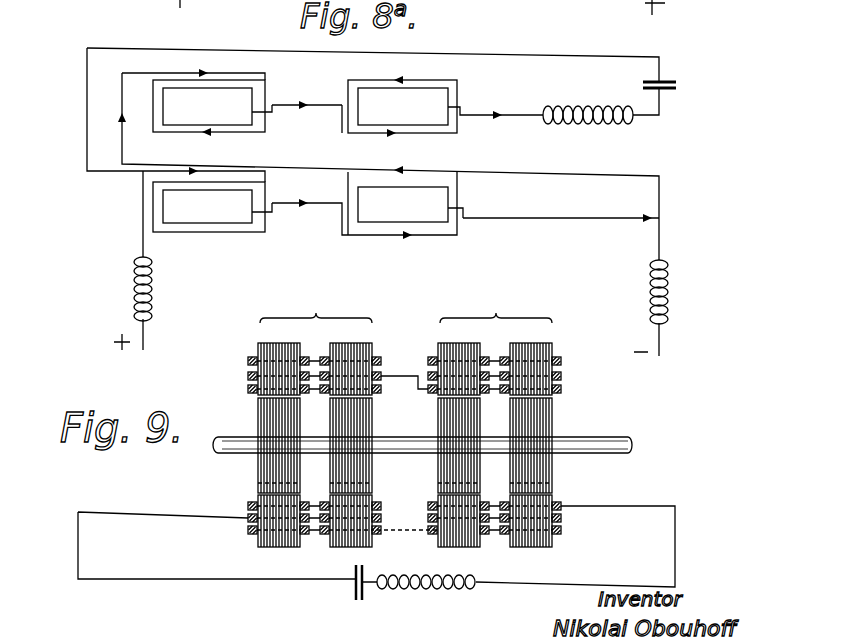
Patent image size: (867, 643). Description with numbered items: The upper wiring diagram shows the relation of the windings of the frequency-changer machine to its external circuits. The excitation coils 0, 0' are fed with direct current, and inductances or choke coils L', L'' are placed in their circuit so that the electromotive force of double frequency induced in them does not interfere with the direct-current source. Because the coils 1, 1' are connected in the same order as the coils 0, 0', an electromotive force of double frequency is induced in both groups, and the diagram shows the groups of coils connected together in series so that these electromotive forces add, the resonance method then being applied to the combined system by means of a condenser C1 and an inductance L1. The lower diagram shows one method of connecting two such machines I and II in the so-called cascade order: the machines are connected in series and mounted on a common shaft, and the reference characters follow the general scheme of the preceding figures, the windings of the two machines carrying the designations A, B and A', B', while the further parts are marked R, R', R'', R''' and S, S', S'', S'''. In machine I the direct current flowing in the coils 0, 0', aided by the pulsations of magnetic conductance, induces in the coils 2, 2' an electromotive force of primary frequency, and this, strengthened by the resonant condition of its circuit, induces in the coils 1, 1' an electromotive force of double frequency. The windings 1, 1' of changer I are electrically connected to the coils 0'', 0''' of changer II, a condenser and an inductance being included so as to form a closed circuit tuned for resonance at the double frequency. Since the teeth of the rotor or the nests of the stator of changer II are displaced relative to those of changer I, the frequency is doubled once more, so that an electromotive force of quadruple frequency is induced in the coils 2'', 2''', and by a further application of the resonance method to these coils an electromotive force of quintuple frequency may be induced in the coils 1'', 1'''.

In FIG. 8A, the coil 1 is at (197, 95).
In FIG. 9, the coil 1 is at (226, 455).
In FIG. 8A, the coil 1' is at (399, 96).
In FIG. 9, the coil 1' is at (391, 361).
In FIG. 8A, the excitation coil 0 is at (212, 224).
In FIG. 9, the excitation coil 0 is at (232, 447).
In FIG. 8A, the excitation coil 0' is at (405, 220).
In FIG. 9, the excitation coil 0' is at (388, 402).
In FIG. 8A, the condenser C1 is at (672, 80).
In FIG. 8A, the inductance L1 is at (590, 125).
In FIG. 8A, the choke coil L' is at (117, 278).
In FIG. 8A, the choke coil L'' is at (681, 279).
In FIG. 9, the coil 2 is at (240, 442).
In FIG. 9, the coil 2' is at (386, 339).
In FIG. 9, the coil 1'' is at (424, 363).
In FIG. 9, the coil 2'' is at (432, 330).
In FIG. 9, the coil 0'' is at (427, 409).
In FIG. 9, the coil 2''' is at (581, 436).
In FIG. 9, the coil 1''' is at (585, 440).
In FIG. 9, the coil 0''' is at (580, 445).
In FIG. 9, the field winding A is at (279, 357).
In FIG. 9, the field winding B is at (351, 357).
In FIG. 9, the field winding A' is at (459, 357).
In FIG. 9, the field winding B' is at (531, 357).
In FIG. 9, the frequency changer I is at (316, 304).
In FIG. 9, the frequency changer II is at (496, 304).
In FIG. 9, the rotor core R is at (265, 445).
In FIG. 9, the rotor core R' is at (363, 445).
In FIG. 9, the rotor core R'' is at (444, 446).
In FIG. 9, the rotor core R''' is at (556, 445).
In FIG. 9, the secondary winding S is at (279, 536).
In FIG. 9, the secondary winding S' is at (351, 536).
In FIG. 9, the secondary winding S'' is at (464, 534).
In FIG. 9, the secondary winding S''' is at (537, 536).